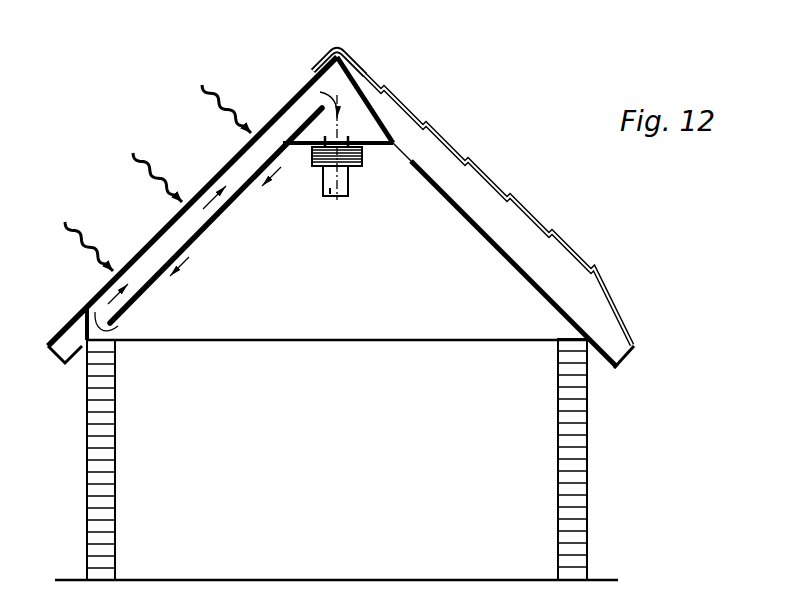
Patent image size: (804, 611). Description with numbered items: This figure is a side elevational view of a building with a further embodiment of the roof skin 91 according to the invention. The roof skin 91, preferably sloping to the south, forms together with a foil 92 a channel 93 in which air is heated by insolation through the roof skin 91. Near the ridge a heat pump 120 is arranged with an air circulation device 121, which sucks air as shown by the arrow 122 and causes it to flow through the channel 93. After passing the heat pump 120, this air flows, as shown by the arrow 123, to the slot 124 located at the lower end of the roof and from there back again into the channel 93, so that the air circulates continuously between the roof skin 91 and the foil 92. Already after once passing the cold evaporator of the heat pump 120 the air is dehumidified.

The roof skin 91 is at (150, 245).
The foil 92 is at (112, 328).
The channel 93 is at (252, 168).
The heat pump 120 is at (332, 198).
The air circulation device 121 is at (313, 157).
The arrow 122 is at (318, 77).
The arrow 123 is at (189, 258).
The slot 124 is at (113, 338).